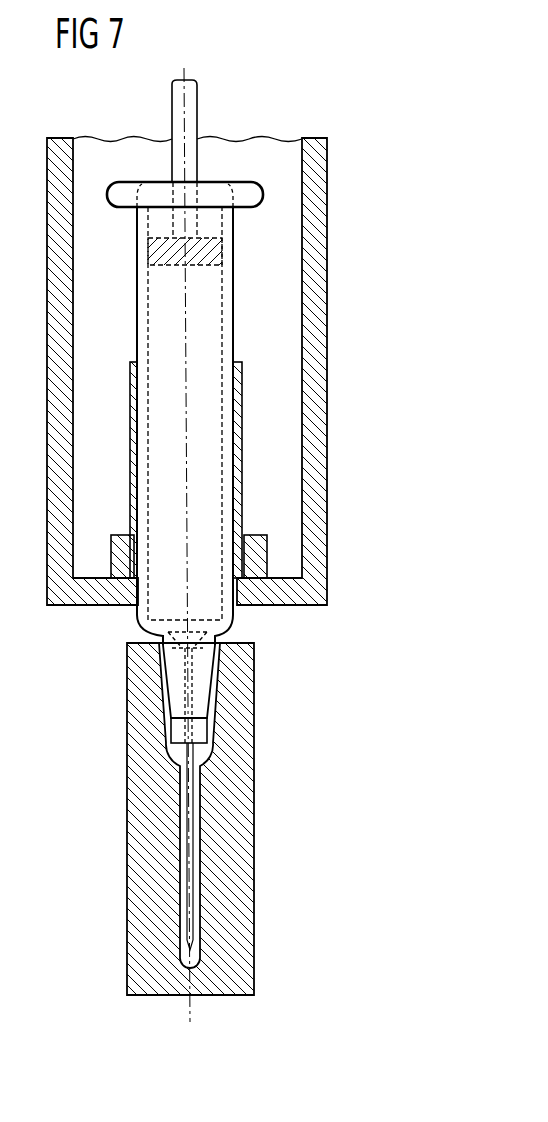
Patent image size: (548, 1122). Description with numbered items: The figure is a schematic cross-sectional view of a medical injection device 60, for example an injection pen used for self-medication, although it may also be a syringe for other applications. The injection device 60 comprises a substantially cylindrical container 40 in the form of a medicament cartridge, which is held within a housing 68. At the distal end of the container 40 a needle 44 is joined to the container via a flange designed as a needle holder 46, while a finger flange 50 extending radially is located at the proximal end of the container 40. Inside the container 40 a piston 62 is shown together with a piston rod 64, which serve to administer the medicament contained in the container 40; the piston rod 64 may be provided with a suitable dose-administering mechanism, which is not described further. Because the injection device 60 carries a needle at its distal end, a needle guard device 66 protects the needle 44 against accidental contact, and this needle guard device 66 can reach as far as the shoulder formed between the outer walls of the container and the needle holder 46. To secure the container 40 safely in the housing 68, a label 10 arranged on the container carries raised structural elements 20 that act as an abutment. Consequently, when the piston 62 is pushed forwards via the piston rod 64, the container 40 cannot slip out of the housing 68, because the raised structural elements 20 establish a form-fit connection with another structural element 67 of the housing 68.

The label 10 is at (238, 423).
The raised structural elements 20 is at (120, 535).
The container 40 is at (217, 283).
The needle 44 is at (193, 830).
The needle holder 46 is at (197, 693).
The finger flange 50 is at (253, 193).
The injection device 60 is at (248, 405).
The piston 62 is at (213, 253).
The piston rod 64 is at (192, 110).
The needle guard device 66 is at (243, 888).
The structural element of the housing 67 is at (295, 606).
The housing 68 is at (317, 345).